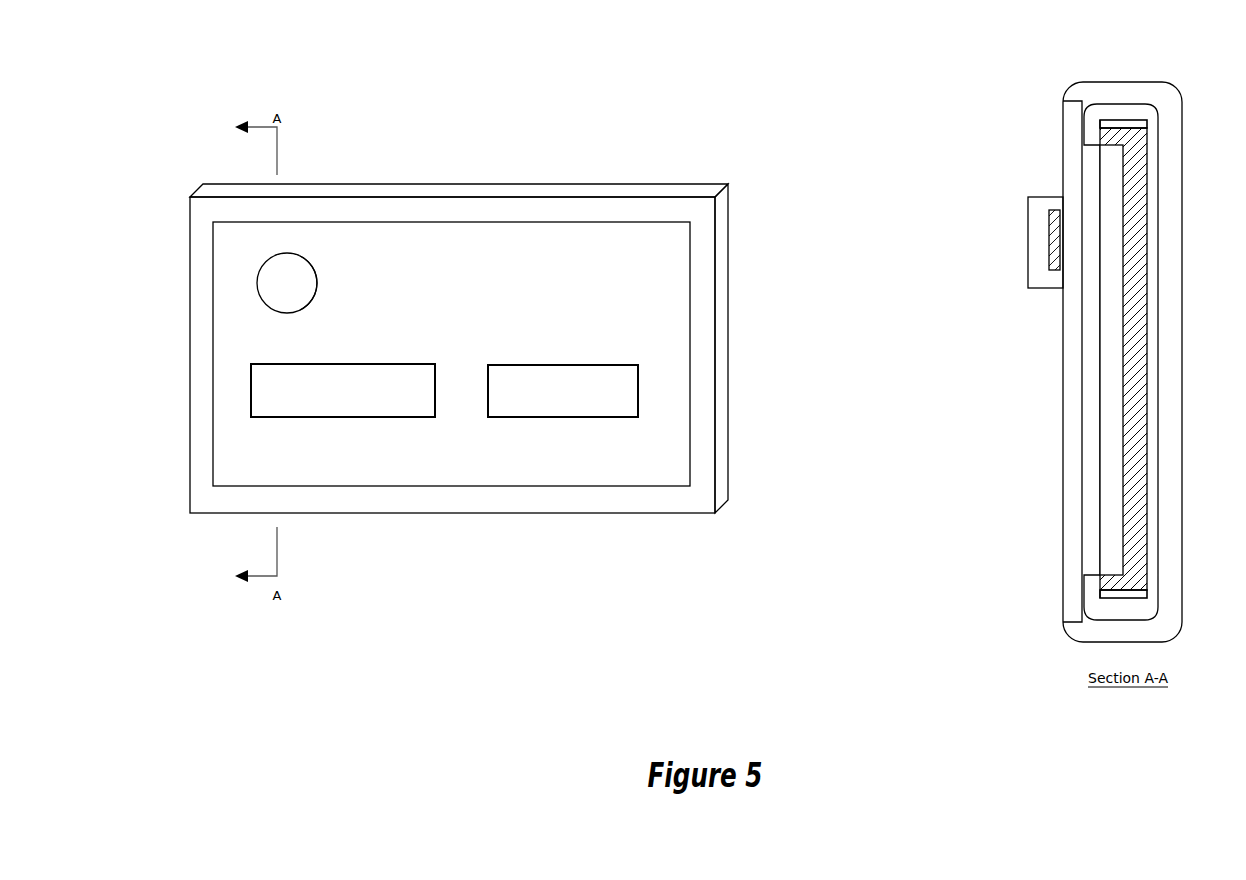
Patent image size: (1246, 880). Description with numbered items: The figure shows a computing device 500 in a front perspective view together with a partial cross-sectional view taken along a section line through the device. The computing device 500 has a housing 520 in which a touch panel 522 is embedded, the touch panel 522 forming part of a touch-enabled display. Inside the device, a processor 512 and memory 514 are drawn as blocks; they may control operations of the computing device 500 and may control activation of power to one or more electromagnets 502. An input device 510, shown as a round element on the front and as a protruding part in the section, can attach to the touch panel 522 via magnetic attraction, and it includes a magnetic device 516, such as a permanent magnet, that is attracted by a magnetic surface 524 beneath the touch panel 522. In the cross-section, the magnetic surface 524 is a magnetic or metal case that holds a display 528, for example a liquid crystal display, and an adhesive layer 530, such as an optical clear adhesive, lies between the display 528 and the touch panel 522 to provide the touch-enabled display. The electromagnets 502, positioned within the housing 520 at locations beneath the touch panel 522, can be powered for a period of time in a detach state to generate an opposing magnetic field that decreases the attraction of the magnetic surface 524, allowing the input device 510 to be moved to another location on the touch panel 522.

The computing device 500 is at (303, 78).
The electromagnet 502 is at (1147, 126).
The input device 510 is at (315, 275).
The processor 512 is at (352, 364).
The memory 514 is at (557, 364).
The magnetic device 516 is at (1050, 252).
The housing 520 is at (462, 190).
The touch panel 522 is at (682, 268).
The magnetic surface 524 is at (1146, 170).
The display 528 is at (1113, 143).
The adhesive layer 530 is at (1088, 182).